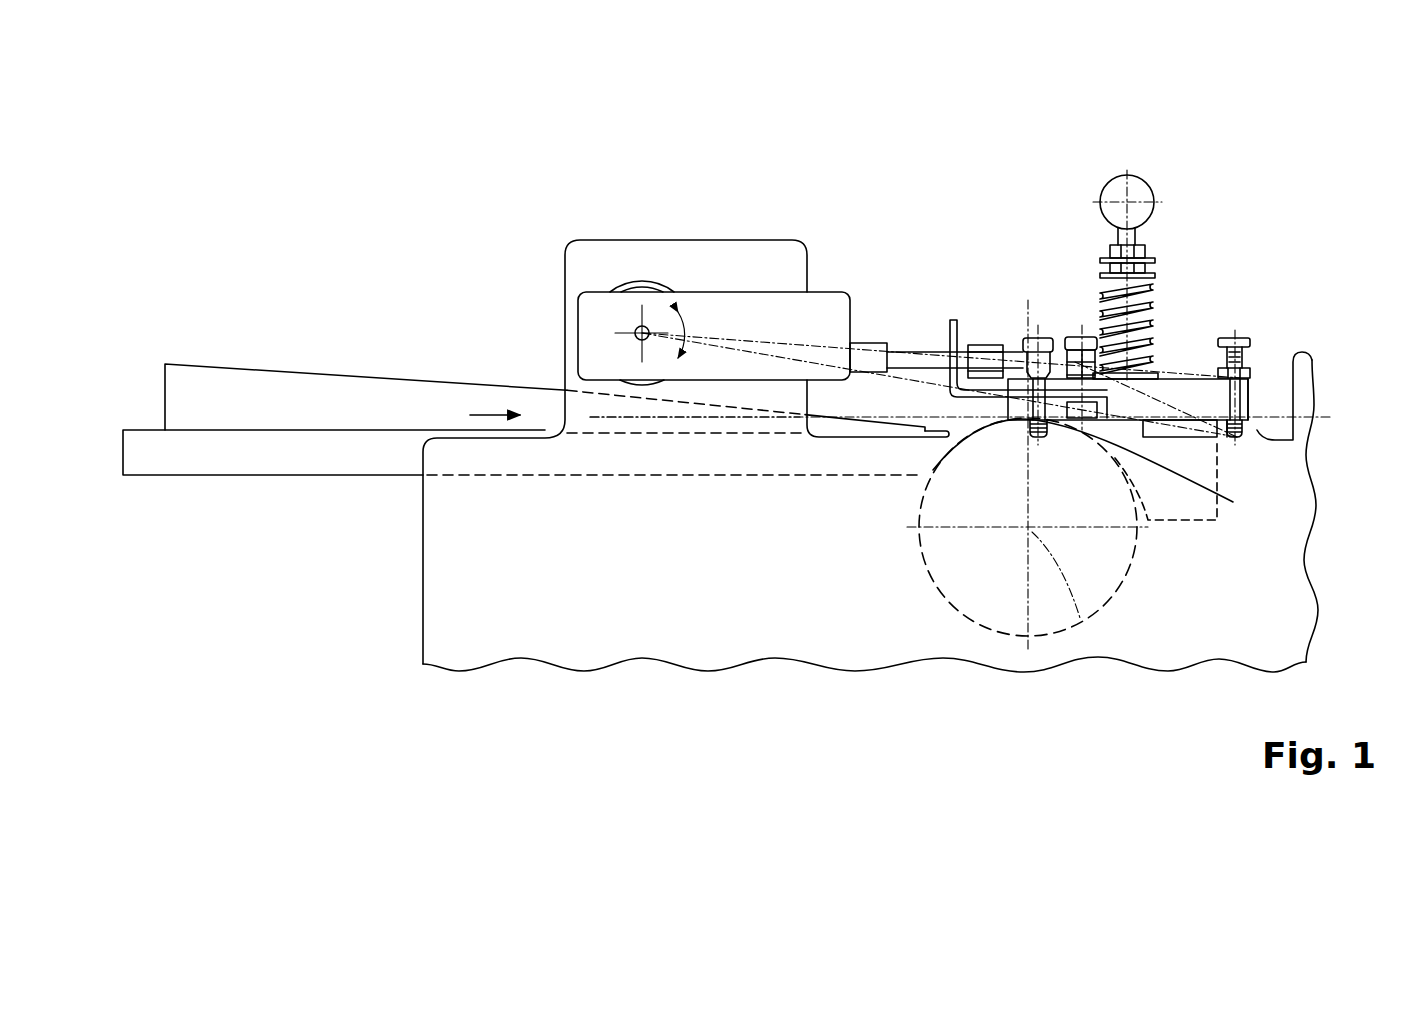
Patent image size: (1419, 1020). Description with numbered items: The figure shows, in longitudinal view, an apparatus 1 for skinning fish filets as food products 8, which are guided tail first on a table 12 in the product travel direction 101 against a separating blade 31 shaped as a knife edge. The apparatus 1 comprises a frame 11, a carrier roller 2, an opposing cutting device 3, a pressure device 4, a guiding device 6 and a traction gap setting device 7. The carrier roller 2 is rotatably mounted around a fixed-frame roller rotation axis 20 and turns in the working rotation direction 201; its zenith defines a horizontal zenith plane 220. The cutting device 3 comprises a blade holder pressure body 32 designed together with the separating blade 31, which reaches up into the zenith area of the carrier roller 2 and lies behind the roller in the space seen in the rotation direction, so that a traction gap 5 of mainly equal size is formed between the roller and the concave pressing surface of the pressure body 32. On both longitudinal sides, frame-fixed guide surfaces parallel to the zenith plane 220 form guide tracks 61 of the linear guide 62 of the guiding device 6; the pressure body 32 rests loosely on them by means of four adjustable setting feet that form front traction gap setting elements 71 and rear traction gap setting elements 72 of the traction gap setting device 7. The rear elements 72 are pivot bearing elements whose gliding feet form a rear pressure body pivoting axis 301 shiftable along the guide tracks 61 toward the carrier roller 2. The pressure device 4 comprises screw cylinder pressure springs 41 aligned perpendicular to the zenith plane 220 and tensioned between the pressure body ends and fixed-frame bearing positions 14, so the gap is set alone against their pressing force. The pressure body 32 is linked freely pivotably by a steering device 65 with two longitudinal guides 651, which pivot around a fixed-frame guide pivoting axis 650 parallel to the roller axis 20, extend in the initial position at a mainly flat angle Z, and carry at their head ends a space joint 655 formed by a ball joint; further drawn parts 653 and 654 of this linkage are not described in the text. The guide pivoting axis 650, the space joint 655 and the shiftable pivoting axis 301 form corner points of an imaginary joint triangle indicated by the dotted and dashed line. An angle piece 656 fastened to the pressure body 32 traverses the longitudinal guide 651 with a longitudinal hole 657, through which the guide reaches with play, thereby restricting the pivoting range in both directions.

The apparatus 1 is at (378, 218).
The carrier roller 2 is at (940, 595).
The roller rotation axis 20 is at (1084, 618).
The working rotation direction 201 is at (1050, 507).
The zenith plane 220 is at (633, 419).
The opposing cutting device 3 is at (993, 432).
The rear pressure body pivoting axis 301 is at (1235, 440).
The separating blade 31 is at (1048, 425).
The blade holder pressure body 32 is at (1182, 525).
The pressure device 4 is at (1085, 225).
The screw cylinder pressure springs 41 is at (1150, 284).
The traction gap 5 is at (1140, 468).
The guiding device 6 is at (790, 385).
The guide tracks 61 is at (1303, 423).
The linear guide 62 is at (1262, 470).
The steering device 65 is at (857, 300).
The guide pivoting axis 650 is at (656, 315).
The longitudinal guides 651 is at (827, 312).
The roller 653 is at (597, 307).
The spring seat 654 is at (1152, 333).
The space joint 655 is at (1078, 328).
The angle piece 656 is at (950, 327).
The longitudinal hole 657 is at (947, 345).
The traction gap setting device 7 is at (1035, 335).
The front-side traction gap setting elements 71 is at (1003, 345).
The rear traction gap setting elements 72 is at (1223, 363).
The food products 8 is at (417, 398).
The product travel direction 101 is at (493, 412).
The frame 11 is at (565, 302).
The table 12 is at (350, 455).
The fixed-frame bearing positions 14 is at (1148, 272).
The angle Z is at (690, 335).